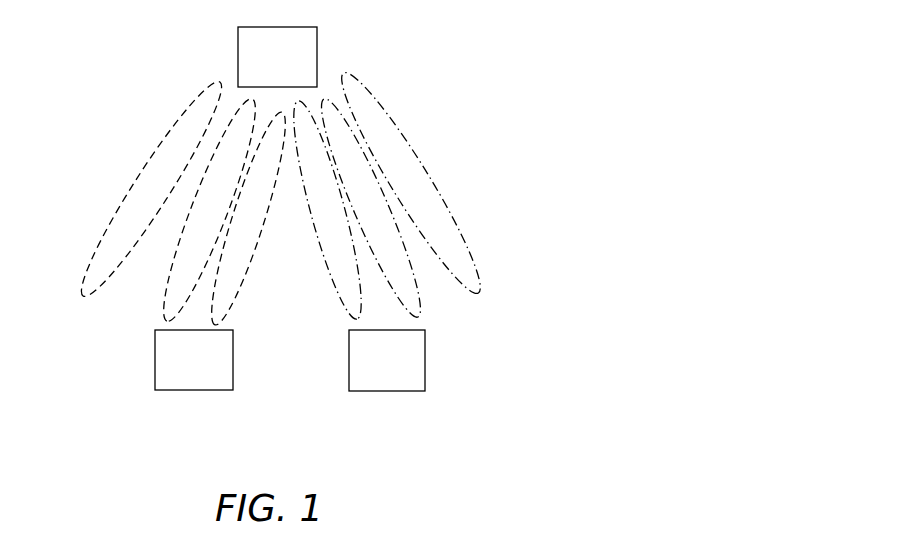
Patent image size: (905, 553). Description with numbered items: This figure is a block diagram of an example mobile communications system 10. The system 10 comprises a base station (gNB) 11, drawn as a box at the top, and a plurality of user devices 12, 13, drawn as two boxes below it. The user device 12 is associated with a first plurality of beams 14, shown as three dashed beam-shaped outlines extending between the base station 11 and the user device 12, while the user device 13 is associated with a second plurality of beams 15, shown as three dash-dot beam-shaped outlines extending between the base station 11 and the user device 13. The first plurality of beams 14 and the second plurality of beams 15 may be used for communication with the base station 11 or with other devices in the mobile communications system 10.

The system 10 is at (540, 378).
The base station (gNB) 11 is at (317, 57).
The user device 12 is at (157, 348).
The user device 13 is at (425, 367).
The first plurality of beams 14 is at (110, 193).
The second plurality of beams 15 is at (478, 227).